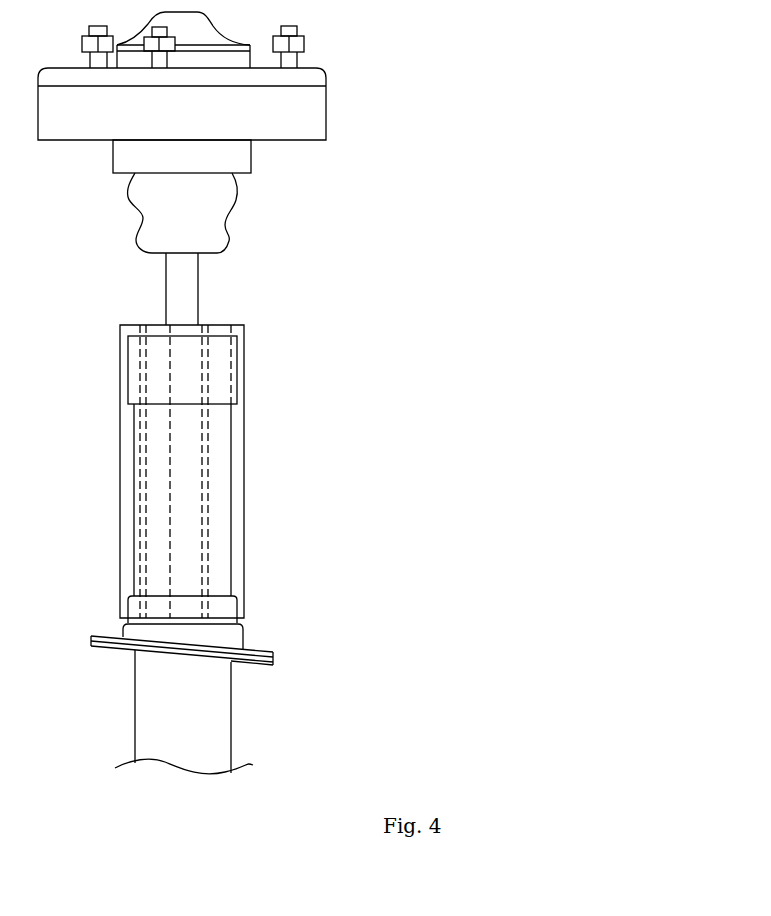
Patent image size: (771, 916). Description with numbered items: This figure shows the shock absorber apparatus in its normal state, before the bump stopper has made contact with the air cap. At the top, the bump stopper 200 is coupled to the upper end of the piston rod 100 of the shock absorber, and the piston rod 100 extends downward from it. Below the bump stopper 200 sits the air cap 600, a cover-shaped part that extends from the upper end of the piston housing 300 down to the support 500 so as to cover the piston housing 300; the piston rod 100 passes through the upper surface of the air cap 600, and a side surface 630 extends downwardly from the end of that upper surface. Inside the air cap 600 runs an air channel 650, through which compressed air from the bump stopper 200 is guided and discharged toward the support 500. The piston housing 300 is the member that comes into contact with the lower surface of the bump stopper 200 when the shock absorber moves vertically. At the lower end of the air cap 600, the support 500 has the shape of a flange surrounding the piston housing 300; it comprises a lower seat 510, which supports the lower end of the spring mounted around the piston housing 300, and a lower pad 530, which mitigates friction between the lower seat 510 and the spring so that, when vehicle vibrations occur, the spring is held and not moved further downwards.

The piston rod 100 is at (192, 292).
The bump stopper 200 is at (208, 220).
The piston housing 300 is at (220, 727).
The support 500 is at (270, 652).
The lower seat 510 is at (268, 665).
The lower pad 530 is at (268, 647).
The air cap 600 is at (269, 487).
The side surface 630 is at (245, 443).
The air channel 650 is at (208, 523).